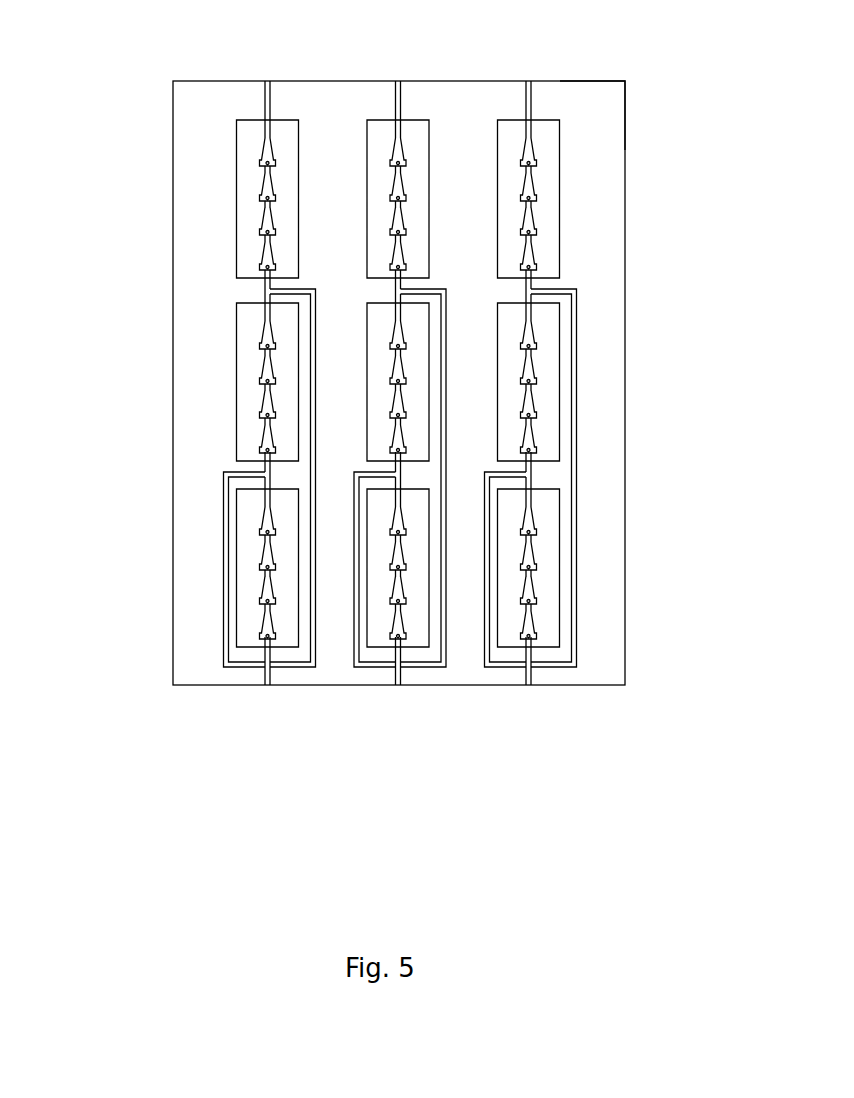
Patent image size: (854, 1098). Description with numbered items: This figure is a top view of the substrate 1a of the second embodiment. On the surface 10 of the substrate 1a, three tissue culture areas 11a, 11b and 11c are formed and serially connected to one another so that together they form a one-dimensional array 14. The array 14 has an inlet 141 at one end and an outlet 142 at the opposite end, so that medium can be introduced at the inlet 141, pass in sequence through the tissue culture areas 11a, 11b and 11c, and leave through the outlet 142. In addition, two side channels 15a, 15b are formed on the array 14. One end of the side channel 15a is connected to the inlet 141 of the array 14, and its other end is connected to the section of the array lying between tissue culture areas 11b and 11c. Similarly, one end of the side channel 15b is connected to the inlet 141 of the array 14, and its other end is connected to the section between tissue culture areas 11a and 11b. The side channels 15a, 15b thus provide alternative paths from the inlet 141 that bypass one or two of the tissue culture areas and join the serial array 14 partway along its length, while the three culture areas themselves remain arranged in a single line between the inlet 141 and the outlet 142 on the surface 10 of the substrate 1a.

The substrate 1a is at (633, 75).
The surface 10 is at (623, 655).
The one-dimensional array 14 is at (82, 163).
The tissue culture area 11a is at (226, 200).
The tissue culture area 11b is at (226, 385).
The tissue culture area 11c is at (226, 567).
The inlet 141 is at (269, 690).
The outlet 142 is at (266, 81).
The side channel 15a is at (225, 633).
The side channel 15b is at (304, 668).